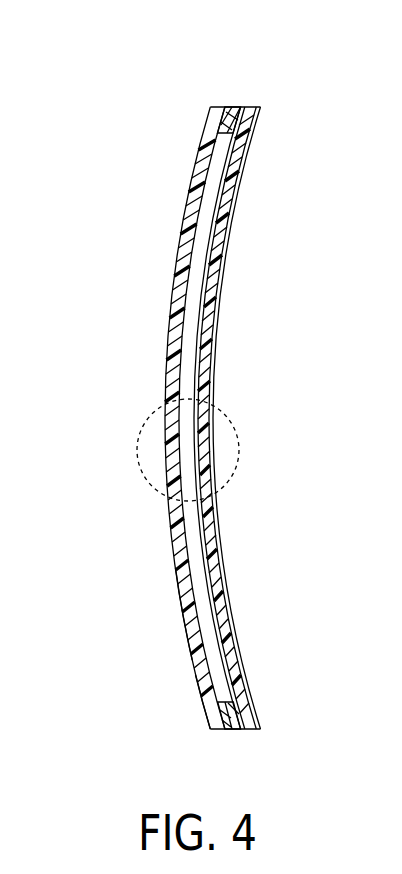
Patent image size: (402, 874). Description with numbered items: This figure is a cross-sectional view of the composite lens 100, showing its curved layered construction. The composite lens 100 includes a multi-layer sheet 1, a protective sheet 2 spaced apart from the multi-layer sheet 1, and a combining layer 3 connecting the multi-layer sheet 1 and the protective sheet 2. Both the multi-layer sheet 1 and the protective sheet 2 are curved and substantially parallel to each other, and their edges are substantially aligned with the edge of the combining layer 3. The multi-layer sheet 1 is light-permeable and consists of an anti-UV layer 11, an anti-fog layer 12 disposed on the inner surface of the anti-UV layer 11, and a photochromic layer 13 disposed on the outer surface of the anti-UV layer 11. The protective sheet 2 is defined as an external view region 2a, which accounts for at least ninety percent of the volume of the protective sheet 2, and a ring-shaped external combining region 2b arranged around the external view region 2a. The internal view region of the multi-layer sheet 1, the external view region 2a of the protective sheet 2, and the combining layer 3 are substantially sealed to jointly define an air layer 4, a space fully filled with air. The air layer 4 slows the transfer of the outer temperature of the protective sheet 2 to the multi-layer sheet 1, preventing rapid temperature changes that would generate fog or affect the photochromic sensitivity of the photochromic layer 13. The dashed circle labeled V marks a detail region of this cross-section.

The composite lens 100 is at (80, 37).
The multi-layer sheet 1 is at (315, 212).
The anti-UV layer 11 is at (213, 268).
The anti-fog layer 12 is at (236, 215).
The photochromic layer 13 is at (217, 328).
The protective sheet 2 is at (188, 198).
The external view region 2a is at (186, 635).
The external combining region 2b is at (203, 712).
The combining layer 3 is at (231, 106).
The air layer 4 is at (190, 363).
The enlarged region V is at (138, 452).